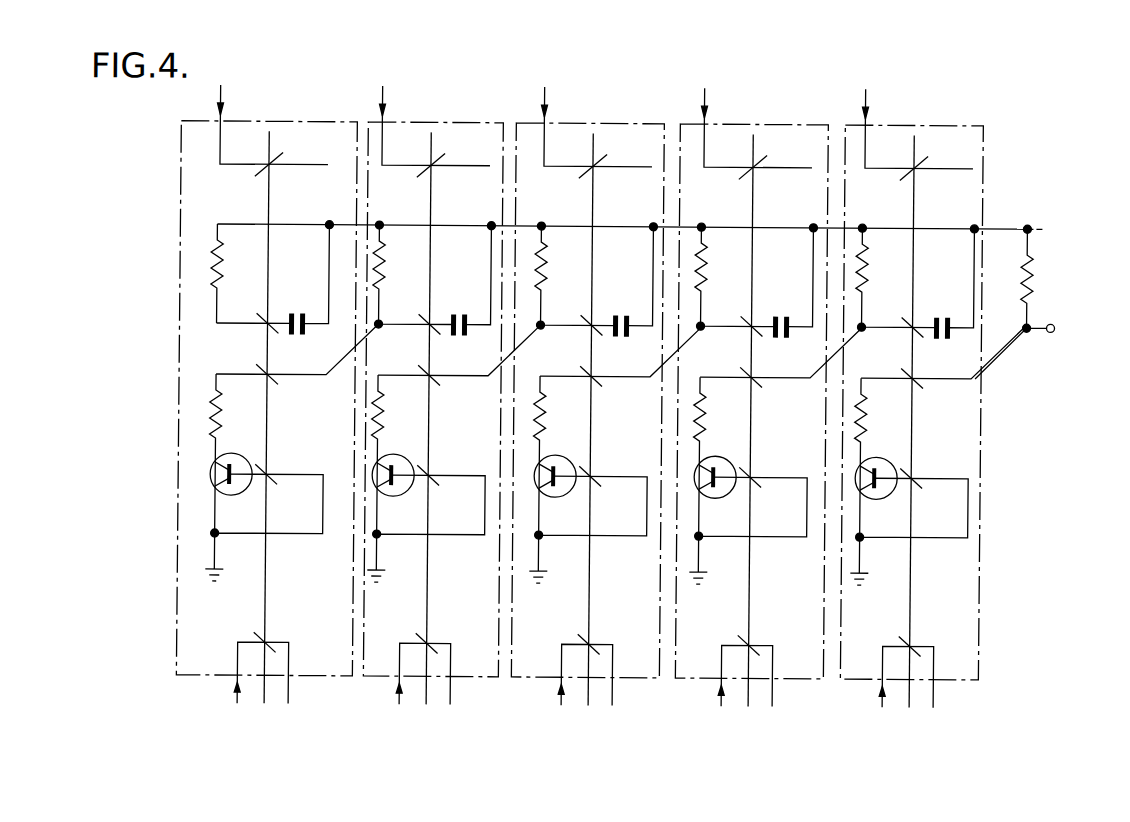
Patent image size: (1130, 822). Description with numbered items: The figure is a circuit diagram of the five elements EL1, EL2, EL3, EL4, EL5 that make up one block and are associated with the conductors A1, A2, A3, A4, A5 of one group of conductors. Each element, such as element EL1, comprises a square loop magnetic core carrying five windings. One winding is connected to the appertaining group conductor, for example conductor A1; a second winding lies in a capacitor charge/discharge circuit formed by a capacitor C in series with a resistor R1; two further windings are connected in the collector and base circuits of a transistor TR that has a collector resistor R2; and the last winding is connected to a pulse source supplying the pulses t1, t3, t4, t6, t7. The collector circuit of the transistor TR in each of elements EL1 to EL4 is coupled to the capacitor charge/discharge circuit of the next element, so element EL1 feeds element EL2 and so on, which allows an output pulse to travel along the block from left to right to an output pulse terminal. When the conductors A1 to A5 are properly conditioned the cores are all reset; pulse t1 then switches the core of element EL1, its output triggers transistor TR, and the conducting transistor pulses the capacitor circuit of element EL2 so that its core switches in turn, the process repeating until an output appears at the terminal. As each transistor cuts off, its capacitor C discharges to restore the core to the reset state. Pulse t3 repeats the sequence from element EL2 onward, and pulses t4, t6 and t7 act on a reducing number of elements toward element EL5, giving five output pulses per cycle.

The group conductor A1 is at (273, 125).
The group conductor A2 is at (435, 126).
The group conductor A3 is at (597, 127).
The group conductor A4 is at (757, 128).
The group conductor A5 is at (918, 129).
The element EL1 is at (290, 128).
The element EL2 is at (452, 128).
The element EL3 is at (614, 128).
The element EL4 is at (774, 128).
The element EL5 is at (935, 128).
The resistor R1 is at (204, 273).
The collector resistor R2 is at (202, 413).
The capacitor C is at (296, 311).
The transistor TR is at (232, 491).
The pulse t1 is at (261, 677).
The pulse t3 is at (423, 678).
The pulse t4 is at (585, 679).
The pulse t6 is at (745, 680).
The pulse t7 is at (906, 681).